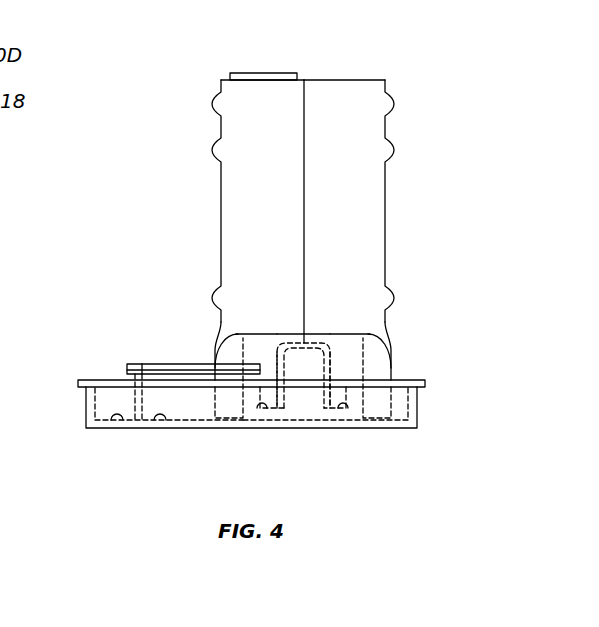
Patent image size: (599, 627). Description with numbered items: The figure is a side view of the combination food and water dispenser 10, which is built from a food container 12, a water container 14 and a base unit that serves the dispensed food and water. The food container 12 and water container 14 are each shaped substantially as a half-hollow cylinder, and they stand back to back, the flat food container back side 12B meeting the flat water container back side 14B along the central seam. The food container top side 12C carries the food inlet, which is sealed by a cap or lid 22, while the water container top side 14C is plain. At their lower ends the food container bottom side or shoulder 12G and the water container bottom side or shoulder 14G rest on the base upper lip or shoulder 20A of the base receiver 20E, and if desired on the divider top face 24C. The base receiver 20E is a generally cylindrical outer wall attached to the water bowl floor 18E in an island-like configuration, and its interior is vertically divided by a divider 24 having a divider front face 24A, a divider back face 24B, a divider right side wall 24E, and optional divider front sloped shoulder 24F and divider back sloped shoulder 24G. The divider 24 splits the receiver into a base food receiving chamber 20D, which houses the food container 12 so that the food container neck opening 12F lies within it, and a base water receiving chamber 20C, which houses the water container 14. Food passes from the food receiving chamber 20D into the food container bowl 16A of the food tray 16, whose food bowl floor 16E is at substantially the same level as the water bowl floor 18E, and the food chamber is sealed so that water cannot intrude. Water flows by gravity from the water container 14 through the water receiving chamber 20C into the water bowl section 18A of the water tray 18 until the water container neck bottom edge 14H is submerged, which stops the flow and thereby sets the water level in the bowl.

The combination food and water dispenser 10 is at (413, 53).
The food container 12 is at (243, 193).
The food container back side 12B is at (304, 123).
The food container top side 12C is at (223, 79).
The food container neck opening 12F is at (248, 404).
The food container bottom side/shoulder 12G is at (288, 346).
The water container 14 is at (365, 193).
The water container back side 14B is at (304, 135).
The water container top side 14C is at (348, 79).
The water container bottom side/shoulder 14G is at (319, 346).
The water container neck bottom edge 14H is at (356, 410).
The food tray 16 is at (196, 358).
The food container bowl 16A is at (208, 415).
The food bowl floor 16E is at (163, 424).
The water tray 18 is at (77, 408).
The water bowl section 18A is at (112, 396).
The water bowl floor 18E is at (120, 424).
The base upper lip or shoulder 20A is at (308, 340).
The base water receiving chamber 20C is at (315, 370).
The base food receiving chamber 20D is at (236, 352).
The base receiver 20E is at (394, 338).
The cap or lid 22 is at (263, 72).
The divider 24 is at (318, 404).
The divider front face 24A is at (277, 353).
The divider back face 24B is at (330, 353).
The divider top face 24C is at (300, 340).
The divider right side wall 24E is at (355, 395).
The divider front sloped shoulder 24F is at (262, 413).
The divider back sloped shoulder 24G is at (343, 413).